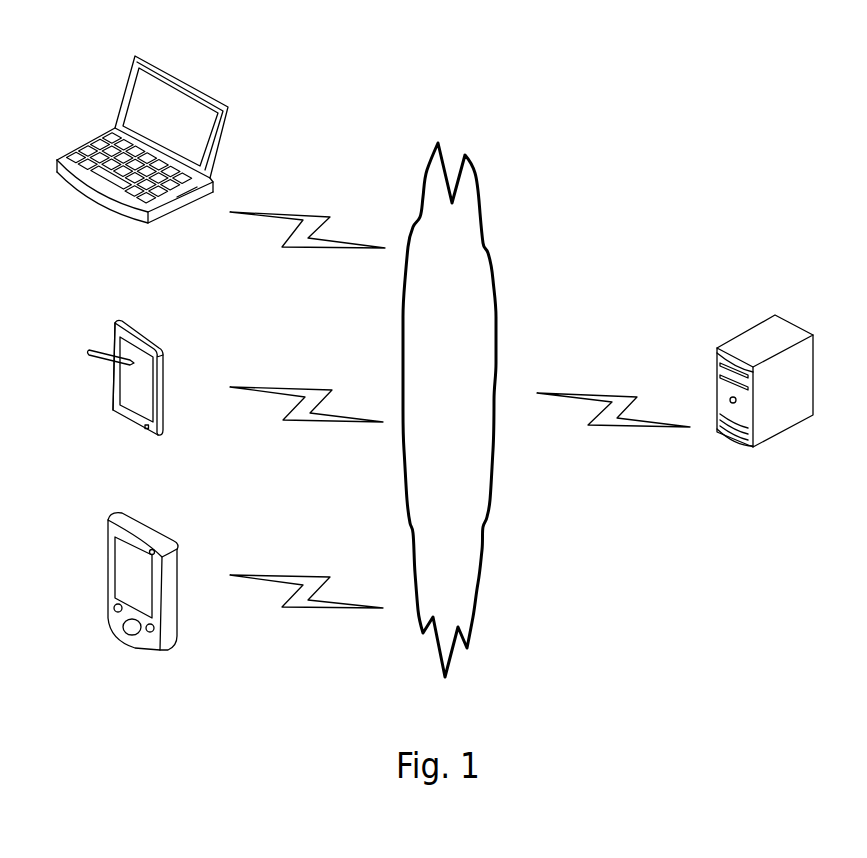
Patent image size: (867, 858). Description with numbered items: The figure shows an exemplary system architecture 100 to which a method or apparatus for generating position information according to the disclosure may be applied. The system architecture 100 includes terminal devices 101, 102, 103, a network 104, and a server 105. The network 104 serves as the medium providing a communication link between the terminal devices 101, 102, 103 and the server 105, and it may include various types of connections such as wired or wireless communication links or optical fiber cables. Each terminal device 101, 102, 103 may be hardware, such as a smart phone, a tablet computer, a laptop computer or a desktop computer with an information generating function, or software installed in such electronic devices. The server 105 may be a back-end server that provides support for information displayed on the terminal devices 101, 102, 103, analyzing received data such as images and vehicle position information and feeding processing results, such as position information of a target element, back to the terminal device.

The system architecture 100 is at (673, 44).
The terminal device 101 is at (143, 601).
The terminal device 102 is at (126, 399).
The terminal device 103 is at (142, 160).
The network 104 is at (460, 410).
The server 105 is at (765, 406).